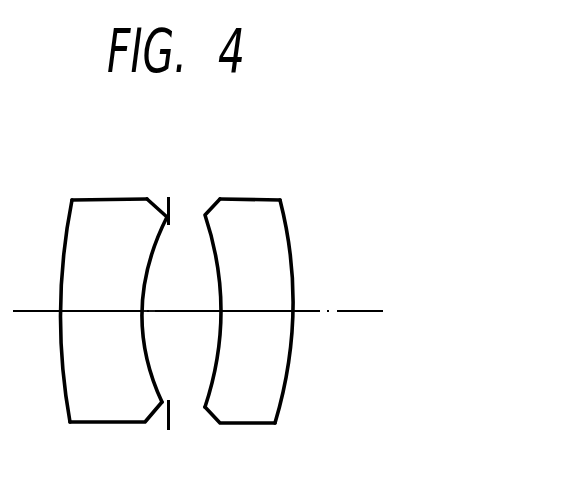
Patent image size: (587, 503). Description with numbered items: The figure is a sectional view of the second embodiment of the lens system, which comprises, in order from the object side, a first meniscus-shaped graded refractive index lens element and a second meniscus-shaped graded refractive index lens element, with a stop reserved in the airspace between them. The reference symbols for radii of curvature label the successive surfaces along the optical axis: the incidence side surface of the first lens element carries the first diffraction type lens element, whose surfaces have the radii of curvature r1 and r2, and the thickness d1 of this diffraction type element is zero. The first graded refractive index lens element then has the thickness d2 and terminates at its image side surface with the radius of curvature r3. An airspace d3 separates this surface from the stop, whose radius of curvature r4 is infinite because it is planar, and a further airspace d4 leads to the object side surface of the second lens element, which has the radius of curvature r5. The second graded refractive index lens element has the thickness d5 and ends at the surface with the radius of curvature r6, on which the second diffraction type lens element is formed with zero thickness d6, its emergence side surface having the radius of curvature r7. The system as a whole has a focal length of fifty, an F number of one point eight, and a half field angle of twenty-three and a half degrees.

The radius of curvature of first surface r1 is at (64, 232).
The radius of curvature of second surface r2 is at (71, 221).
The radius of curvature of third surface r3 is at (148, 254).
The radius of curvature of fourth surface (stop) r4 is at (167, 210).
The radius of curvature of fifth surface r5 is at (210, 243).
The radius of curvature of sixth surface r6 is at (285, 222).
The radius of curvature of seventh surface r7 is at (286, 227).
The thickness of first diffraction type lens element d1 is at (60, 314).
The thickness of first graded refractive index lens element d2 is at (108, 313).
The airspace between first lens element and stop d3 is at (157, 313).
The airspace between stop and second lens element d4 is at (200, 313).
The thickness of second graded refractive index lens element d5 is at (245, 313).
The thickness of second diffraction type lens element d6 is at (293, 313).